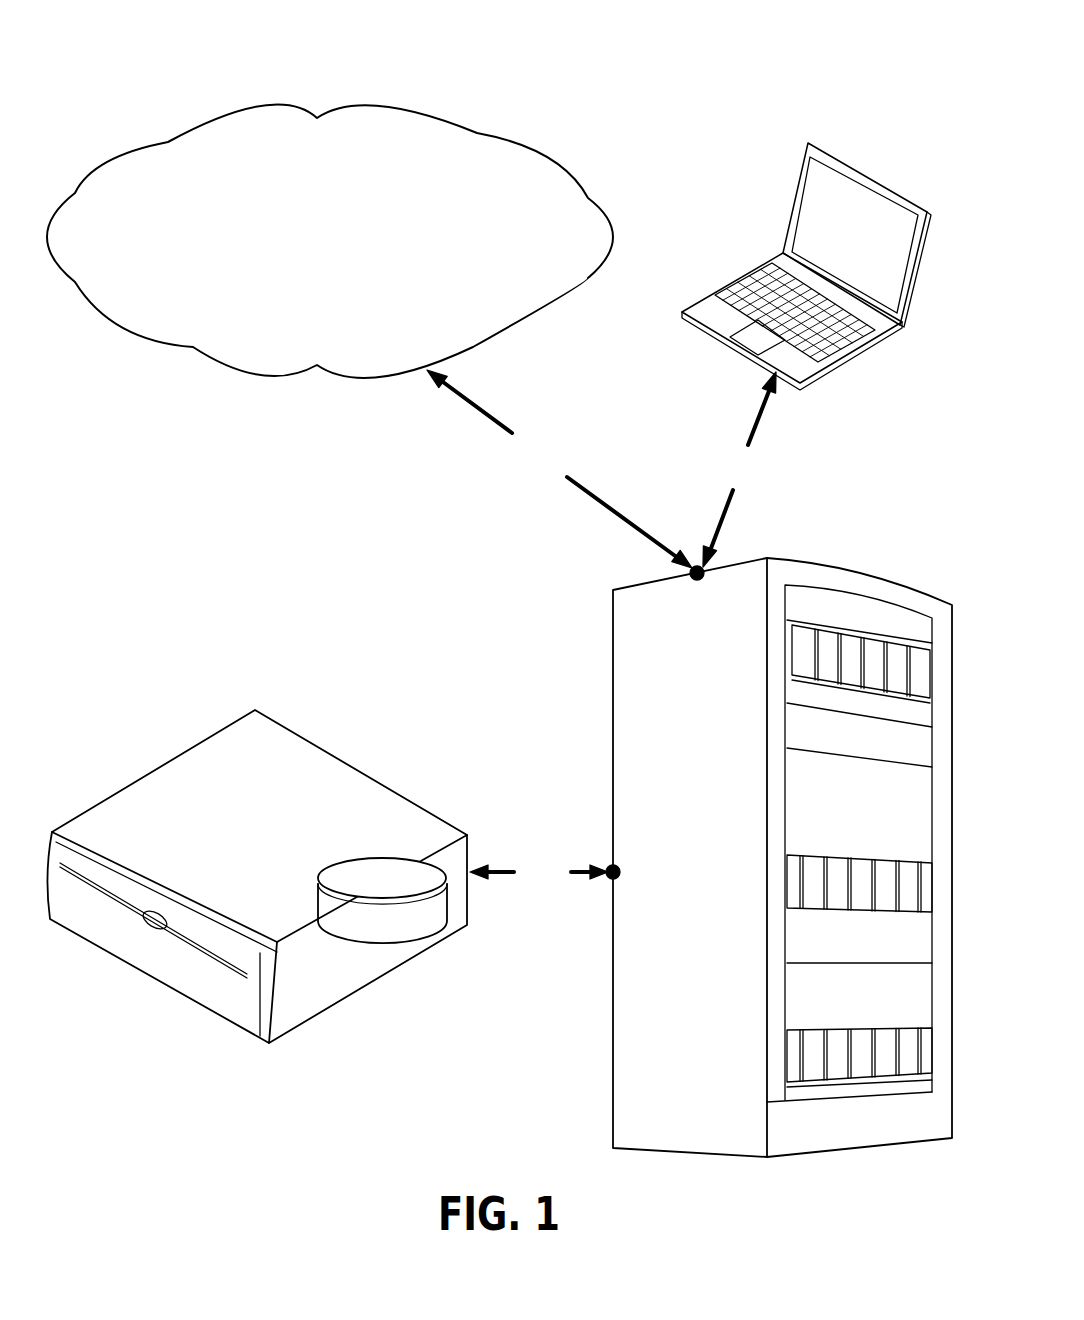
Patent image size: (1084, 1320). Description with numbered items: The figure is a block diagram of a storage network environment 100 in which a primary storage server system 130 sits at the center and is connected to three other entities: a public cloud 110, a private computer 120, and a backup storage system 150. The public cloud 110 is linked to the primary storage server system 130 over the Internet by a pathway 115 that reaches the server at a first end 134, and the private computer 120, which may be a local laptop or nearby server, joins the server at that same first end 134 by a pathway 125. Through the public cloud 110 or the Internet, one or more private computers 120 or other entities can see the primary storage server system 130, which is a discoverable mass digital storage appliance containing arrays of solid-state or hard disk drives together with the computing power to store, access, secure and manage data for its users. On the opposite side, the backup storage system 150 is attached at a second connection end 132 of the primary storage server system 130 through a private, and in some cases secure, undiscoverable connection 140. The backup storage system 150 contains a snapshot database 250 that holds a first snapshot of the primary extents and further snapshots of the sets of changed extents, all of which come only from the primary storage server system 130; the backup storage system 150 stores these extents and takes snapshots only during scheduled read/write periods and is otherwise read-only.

The storage network environment 100 is at (502, 31).
The public cloud 110 is at (263, 375).
The pathway 115 is at (559, 469).
The private computer 120 is at (793, 217).
The pathway 125 is at (739, 469).
The primary storage server system 130 is at (612, 750).
The second connection end 132 is at (606, 883).
The first end of the primary storage server 134 is at (722, 555).
The private/secure connection 140 is at (539, 871).
The backup storage system 150 is at (227, 727).
The snapshot database 250 is at (375, 857).